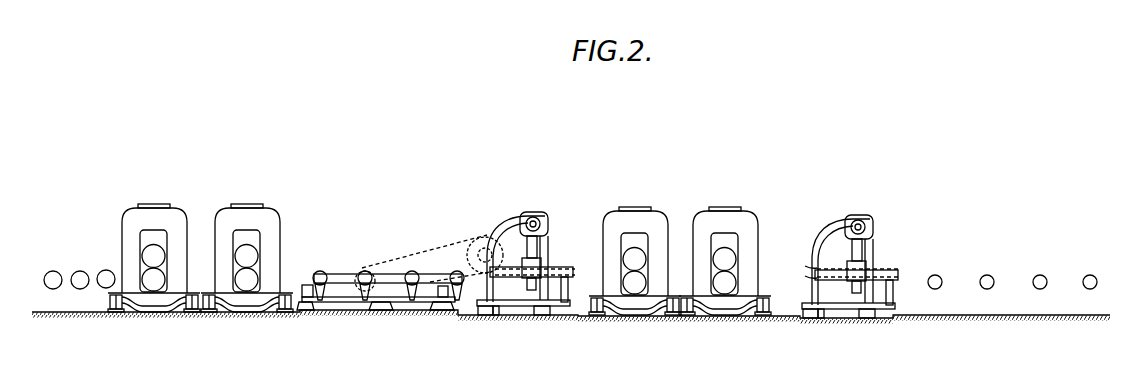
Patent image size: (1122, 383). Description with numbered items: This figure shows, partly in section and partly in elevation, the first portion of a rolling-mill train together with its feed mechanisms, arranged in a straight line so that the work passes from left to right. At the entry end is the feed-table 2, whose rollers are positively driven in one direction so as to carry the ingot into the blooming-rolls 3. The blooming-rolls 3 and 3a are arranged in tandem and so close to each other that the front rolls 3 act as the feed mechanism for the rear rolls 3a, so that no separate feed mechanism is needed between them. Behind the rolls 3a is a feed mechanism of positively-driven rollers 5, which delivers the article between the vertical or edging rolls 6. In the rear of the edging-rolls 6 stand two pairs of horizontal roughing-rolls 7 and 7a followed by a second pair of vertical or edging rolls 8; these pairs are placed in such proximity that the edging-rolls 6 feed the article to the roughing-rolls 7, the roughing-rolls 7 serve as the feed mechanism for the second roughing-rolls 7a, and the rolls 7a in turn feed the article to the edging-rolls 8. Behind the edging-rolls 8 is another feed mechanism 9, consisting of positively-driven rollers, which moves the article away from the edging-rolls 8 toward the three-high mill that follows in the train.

The feed-table 2 is at (60, 273).
The blooming-rolls 3 is at (178, 227).
The blooming-rolls 3a is at (274, 229).
The positively-driven rollers 5 is at (323, 273).
The vertical or edging rolls 6 is at (521, 263).
The horizontal roughing-rolls 7 is at (664, 224).
The horizontal roughing-rolls 7a is at (757, 225).
The vertical or edging rolls 8 is at (863, 252).
The feed mechanism 9 is at (937, 275).